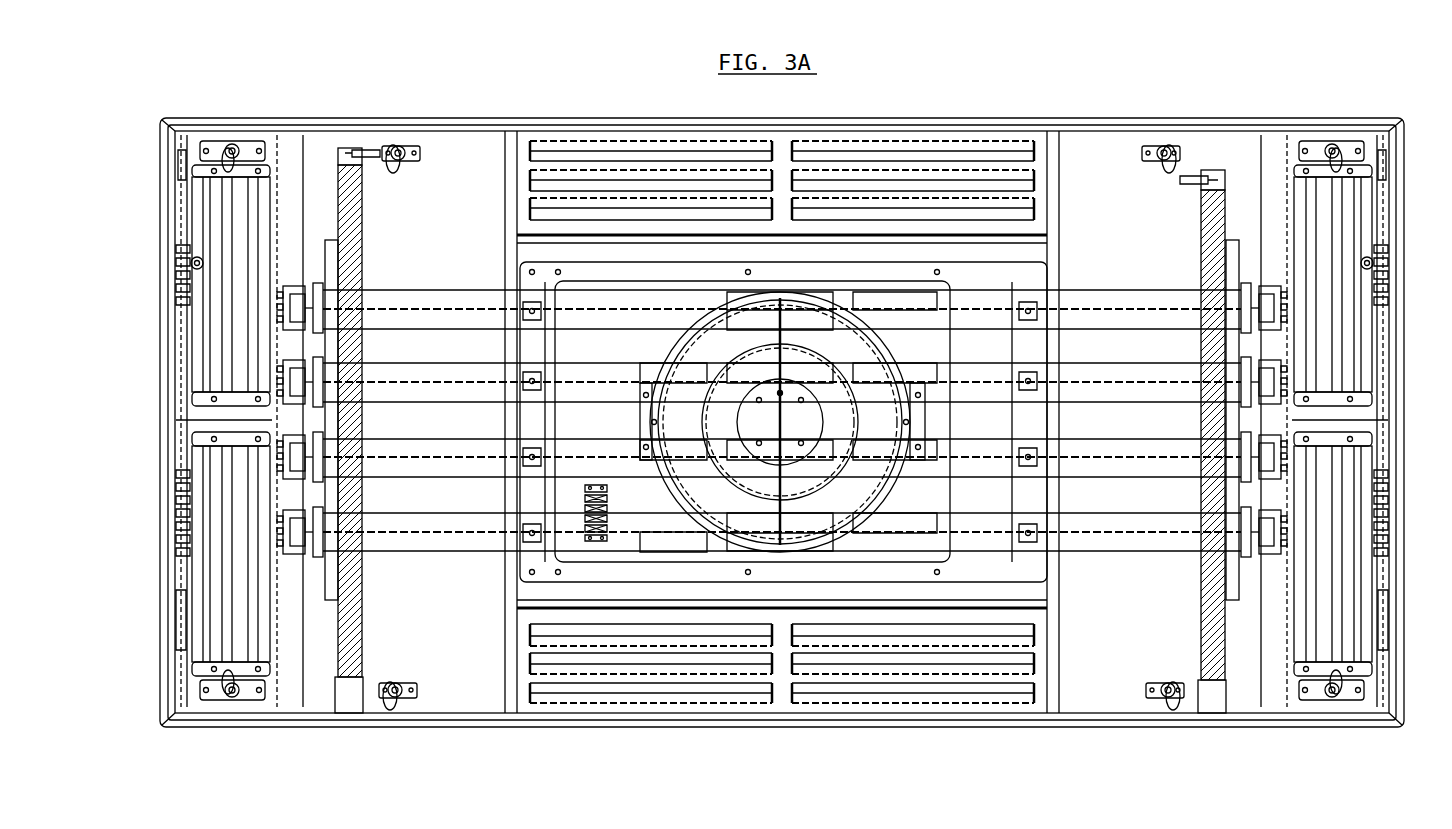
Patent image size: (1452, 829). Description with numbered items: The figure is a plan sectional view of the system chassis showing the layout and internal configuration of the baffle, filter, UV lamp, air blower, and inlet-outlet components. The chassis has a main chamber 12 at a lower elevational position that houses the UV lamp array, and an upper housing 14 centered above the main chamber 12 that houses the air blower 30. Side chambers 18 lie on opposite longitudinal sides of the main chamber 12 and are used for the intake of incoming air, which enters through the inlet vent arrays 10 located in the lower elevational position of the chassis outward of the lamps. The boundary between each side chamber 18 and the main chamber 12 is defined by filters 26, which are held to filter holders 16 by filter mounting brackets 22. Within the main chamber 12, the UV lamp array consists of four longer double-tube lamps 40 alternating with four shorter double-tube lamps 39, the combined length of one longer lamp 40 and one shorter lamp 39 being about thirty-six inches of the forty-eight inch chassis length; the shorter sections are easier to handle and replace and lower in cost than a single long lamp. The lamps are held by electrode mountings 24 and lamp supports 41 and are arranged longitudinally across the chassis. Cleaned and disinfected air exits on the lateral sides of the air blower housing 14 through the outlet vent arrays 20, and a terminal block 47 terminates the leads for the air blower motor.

The inlet vent arrays 10 is at (228, 557).
The main chamber 12 is at (470, 190).
The upper housing 14 is at (980, 270).
The filter holders 16 is at (348, 703).
The side chambers 18 is at (250, 112).
The outlet vent arrays 20 is at (838, 695).
The filter mounting brackets 22 is at (397, 703).
The electrode mountings 24 is at (295, 285).
The filters 26 is at (362, 187).
The air blower 30 is at (708, 355).
The shorter double-tube lamps 39 is at (1085, 290).
The longer double-tube lamps 40 is at (1085, 555).
The lamp supports 41 is at (530, 305).
The terminal block 47 is at (587, 537).